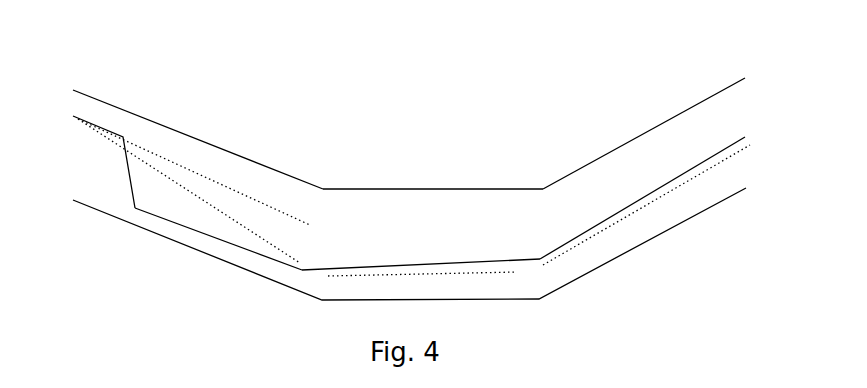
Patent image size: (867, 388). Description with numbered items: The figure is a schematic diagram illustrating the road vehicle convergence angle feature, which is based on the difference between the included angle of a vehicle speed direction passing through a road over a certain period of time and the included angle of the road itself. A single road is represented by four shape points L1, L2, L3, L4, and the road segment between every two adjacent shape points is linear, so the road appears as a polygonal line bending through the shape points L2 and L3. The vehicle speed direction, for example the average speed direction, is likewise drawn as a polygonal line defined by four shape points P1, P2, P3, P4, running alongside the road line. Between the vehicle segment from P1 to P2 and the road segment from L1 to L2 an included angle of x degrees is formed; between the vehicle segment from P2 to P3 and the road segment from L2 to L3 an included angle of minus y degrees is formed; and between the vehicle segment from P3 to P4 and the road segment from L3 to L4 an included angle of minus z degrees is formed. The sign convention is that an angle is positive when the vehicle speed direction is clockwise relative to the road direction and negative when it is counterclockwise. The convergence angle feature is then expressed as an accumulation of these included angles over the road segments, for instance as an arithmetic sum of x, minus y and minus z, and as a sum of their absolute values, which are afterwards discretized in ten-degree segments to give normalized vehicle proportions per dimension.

The shape point L1 is at (192, 123).
The shape point L2 is at (374, 169).
The shape point L3 is at (487, 169).
The shape point L4 is at (645, 111).
The shape point P1 is at (85, 162).
The shape point P2 is at (230, 245).
The shape point P3 is at (422, 271).
The shape point P4 is at (662, 198).
The included angle x is at (194, 191).
The included angle y is at (422, 272).
The included angle z is at (646, 205).